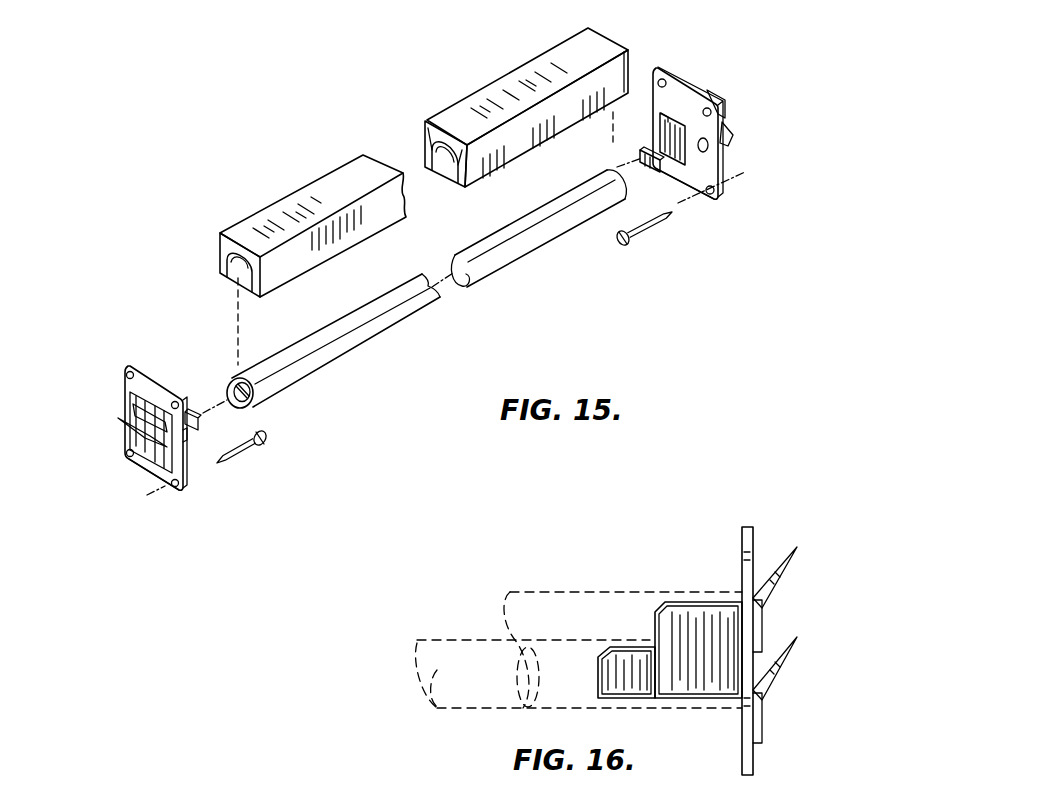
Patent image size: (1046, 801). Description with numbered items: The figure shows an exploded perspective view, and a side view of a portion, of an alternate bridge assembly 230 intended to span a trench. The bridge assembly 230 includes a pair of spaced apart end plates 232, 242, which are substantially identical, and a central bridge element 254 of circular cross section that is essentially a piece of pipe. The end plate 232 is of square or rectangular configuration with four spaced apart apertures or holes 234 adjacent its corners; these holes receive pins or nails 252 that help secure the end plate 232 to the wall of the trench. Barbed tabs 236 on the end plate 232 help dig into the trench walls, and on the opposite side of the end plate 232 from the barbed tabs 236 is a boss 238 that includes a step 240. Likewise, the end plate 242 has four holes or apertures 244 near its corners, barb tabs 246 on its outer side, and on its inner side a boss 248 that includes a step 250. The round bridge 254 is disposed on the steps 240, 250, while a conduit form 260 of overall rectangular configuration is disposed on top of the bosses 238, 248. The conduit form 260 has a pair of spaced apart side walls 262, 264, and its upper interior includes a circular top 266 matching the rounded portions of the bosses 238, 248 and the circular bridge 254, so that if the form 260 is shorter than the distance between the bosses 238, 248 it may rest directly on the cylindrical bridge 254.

In FIG. 15, the bridge assembly 230 is at (323, 146).
In FIG. 15, the end plate 232 is at (688, 70).
In FIG. 16, the end plate 232 is at (742, 547).
In FIG. 15, the apertures or holes 234 is at (702, 202).
In FIG. 15, the barbed tabs 236 is at (733, 130).
In FIG. 16, the barbed tabs 236 is at (790, 547).
In FIG. 15, the boss 238 is at (650, 117).
In FIG. 16, the boss 238 is at (708, 617).
In FIG. 15, the step 240 is at (640, 157).
In FIG. 16, the step 240 is at (622, 645).
In FIG. 15, the end plate 242 is at (145, 367).
In FIG. 15, the holes or apertures 244 is at (127, 457).
In FIG. 15, the barb tabs 246 is at (123, 430).
In FIG. 15, the boss 248 is at (197, 440).
In FIG. 15, the step 250 is at (193, 410).
In FIG. 15, the pins or nails 252 is at (620, 243).
In FIG. 15, the bridge element 254 is at (380, 335).
In FIG. 16, the bridge element 254 is at (455, 637).
In FIG. 15, the conduit form 260 is at (512, 85).
In FIG. 16, the conduit form 260 is at (580, 592).
In FIG. 15, the side wall 262 is at (278, 257).
In FIG. 15, the side wall 264 is at (233, 275).
In FIG. 15, the circular top 266 is at (424, 160).